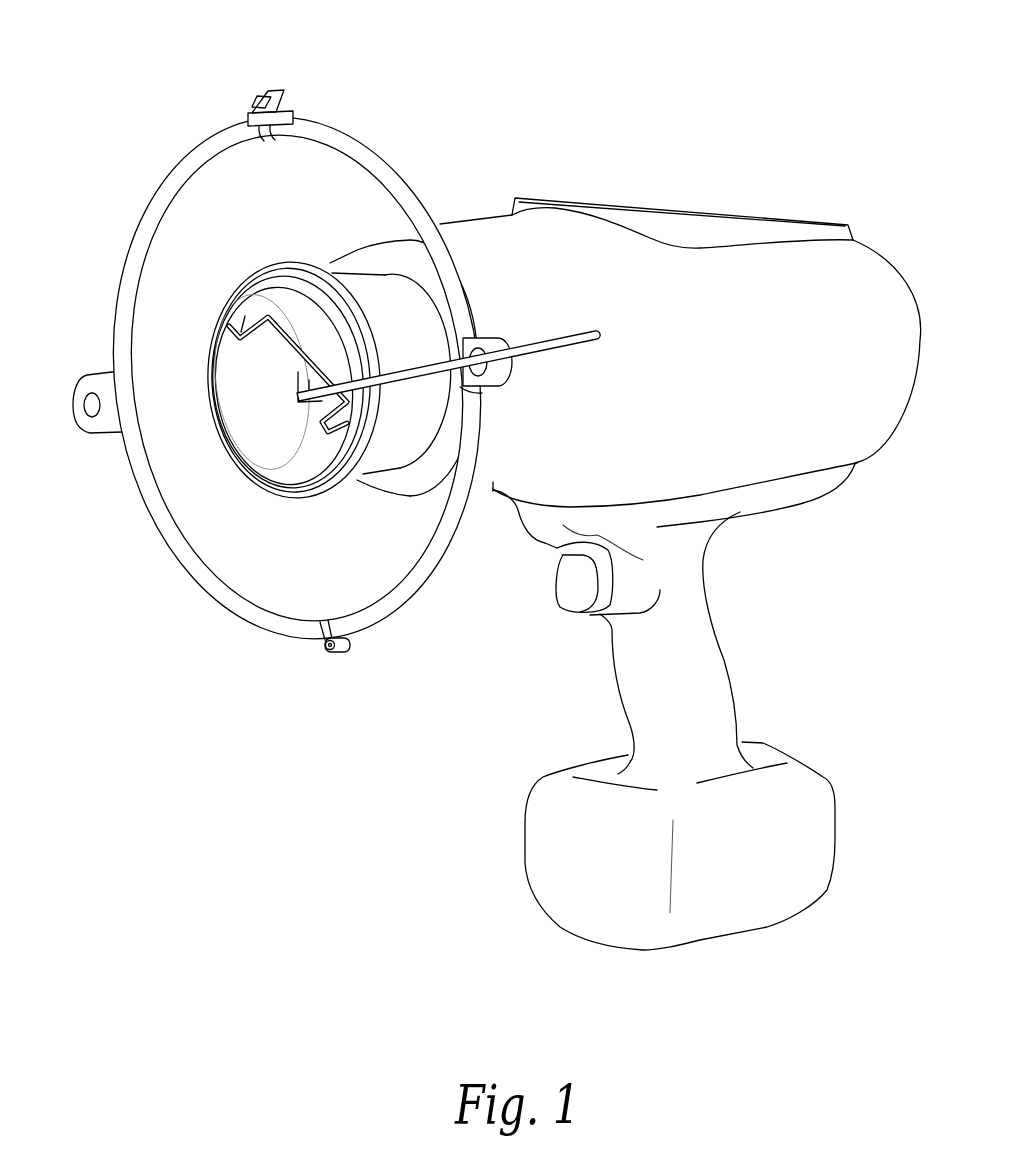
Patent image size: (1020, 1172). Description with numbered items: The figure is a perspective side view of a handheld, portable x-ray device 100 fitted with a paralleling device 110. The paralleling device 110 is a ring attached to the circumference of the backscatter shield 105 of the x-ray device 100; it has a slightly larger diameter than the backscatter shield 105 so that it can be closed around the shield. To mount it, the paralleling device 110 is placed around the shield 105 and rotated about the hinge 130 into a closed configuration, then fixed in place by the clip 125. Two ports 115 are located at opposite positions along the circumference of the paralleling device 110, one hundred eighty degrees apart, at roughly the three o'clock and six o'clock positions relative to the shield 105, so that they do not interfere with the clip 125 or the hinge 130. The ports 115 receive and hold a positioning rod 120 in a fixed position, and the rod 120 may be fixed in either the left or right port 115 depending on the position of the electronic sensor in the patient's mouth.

The handheld x-ray device 100 is at (701, 161).
The backscatter shield 105 is at (311, 390).
The paralleling device 110 is at (163, 180).
The port 115 is at (76, 373).
The positioning rod 120 is at (272, 350).
The clip 125 is at (265, 88).
The hinge 130 is at (338, 655).